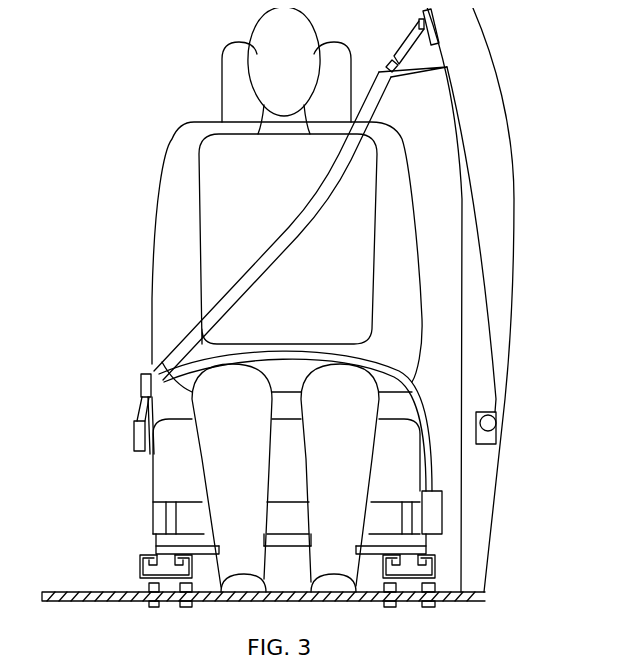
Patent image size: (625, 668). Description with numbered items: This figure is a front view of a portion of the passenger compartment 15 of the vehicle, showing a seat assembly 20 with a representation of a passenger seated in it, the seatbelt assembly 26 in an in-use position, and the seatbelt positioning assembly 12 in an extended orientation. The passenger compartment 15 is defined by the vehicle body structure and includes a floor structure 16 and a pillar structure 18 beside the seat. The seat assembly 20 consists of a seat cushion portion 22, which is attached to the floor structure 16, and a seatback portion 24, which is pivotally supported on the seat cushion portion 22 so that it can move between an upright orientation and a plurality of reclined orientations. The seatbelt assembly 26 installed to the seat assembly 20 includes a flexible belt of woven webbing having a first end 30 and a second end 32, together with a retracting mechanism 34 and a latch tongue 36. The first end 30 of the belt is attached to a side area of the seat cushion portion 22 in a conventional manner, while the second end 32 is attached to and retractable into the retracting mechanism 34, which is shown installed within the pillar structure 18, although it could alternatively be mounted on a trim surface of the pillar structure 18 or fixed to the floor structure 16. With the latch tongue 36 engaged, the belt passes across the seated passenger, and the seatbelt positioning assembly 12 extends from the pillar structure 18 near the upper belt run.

The seatbelt positioning assembly 12 is at (406, 41).
The passenger compartment 15 is at (97, 218).
The floor structure 16 is at (85, 593).
The pillar structure 18 is at (517, 213).
The seat assembly 20 is at (250, 217).
The seat cushion portion 22 is at (175, 478).
The seatback portion 24 is at (178, 192).
The seatbelt assembly 26 is at (279, 239).
The first end 30 is at (432, 487).
The second end 32 is at (495, 367).
The retracting mechanism 34 is at (492, 438).
The latch tongue 36 is at (140, 389).